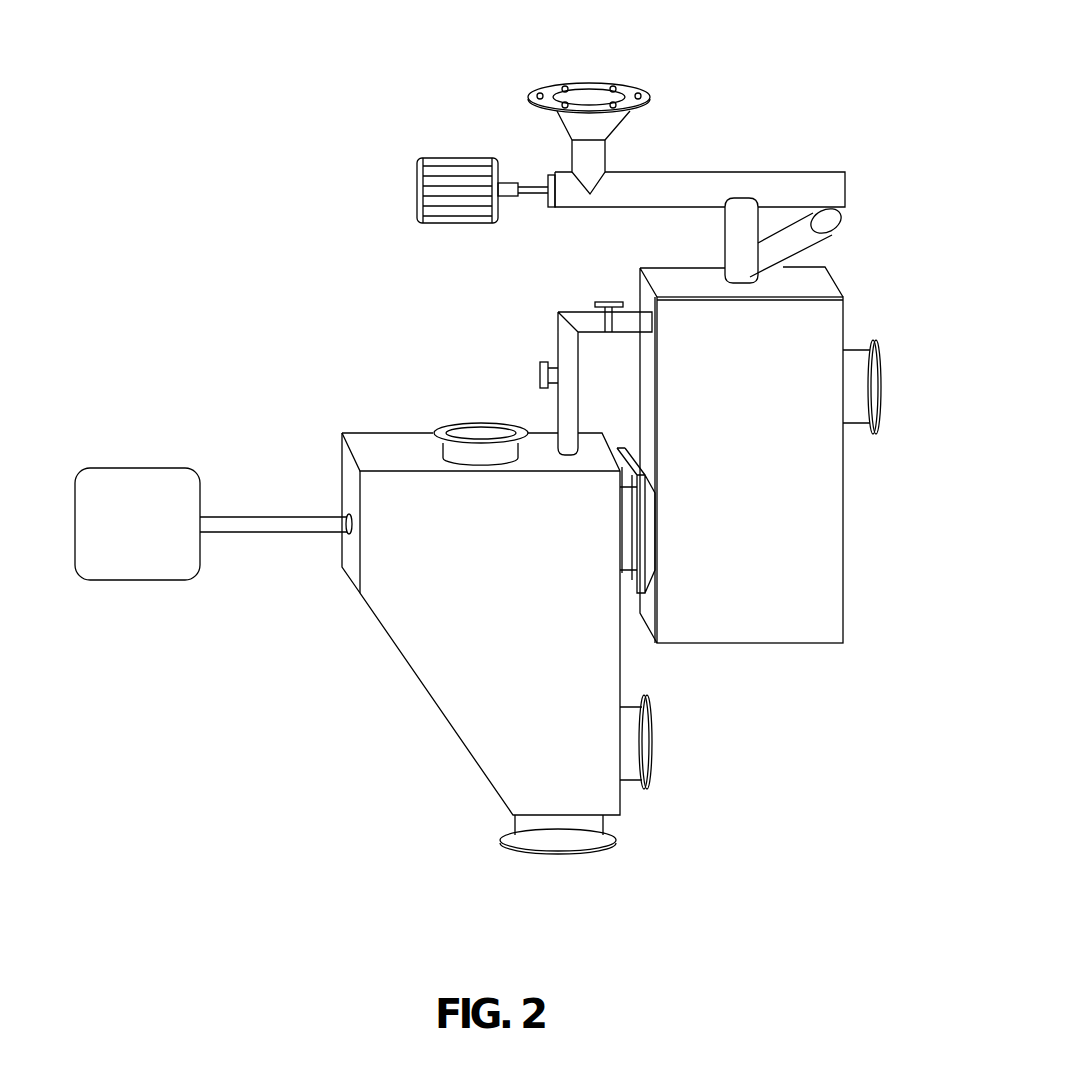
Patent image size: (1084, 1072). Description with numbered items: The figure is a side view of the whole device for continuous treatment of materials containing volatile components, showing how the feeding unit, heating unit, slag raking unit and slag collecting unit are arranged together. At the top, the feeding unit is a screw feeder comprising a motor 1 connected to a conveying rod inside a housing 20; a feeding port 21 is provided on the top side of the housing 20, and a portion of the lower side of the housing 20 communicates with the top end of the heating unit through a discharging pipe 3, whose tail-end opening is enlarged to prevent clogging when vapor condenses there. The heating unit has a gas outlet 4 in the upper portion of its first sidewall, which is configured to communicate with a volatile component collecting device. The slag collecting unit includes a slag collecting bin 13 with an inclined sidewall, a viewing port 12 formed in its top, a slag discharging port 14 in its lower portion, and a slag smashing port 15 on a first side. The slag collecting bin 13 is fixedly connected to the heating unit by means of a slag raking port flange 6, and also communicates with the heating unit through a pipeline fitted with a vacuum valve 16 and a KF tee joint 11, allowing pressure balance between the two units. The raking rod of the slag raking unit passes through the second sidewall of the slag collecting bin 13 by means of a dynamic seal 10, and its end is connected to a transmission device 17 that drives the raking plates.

The motor 1 is at (455, 177).
The feeding port 21 is at (613, 93).
The housing 20 is at (795, 182).
The discharging pipe 3 is at (737, 267).
The gas outlet 4 is at (873, 350).
The vacuum valve 16 is at (595, 300).
The KF tee joint 11 is at (557, 362).
The viewing port 12 is at (480, 430).
The slag raking port flange 6 is at (630, 453).
The transmission device 17 is at (132, 475).
The dynamic seal 10 is at (347, 515).
The slag collecting bin 13 is at (418, 642).
The slag discharging port 14 is at (540, 832).
The slag smashing port 15 is at (633, 747).